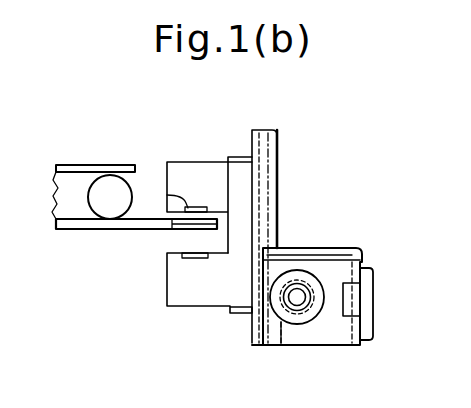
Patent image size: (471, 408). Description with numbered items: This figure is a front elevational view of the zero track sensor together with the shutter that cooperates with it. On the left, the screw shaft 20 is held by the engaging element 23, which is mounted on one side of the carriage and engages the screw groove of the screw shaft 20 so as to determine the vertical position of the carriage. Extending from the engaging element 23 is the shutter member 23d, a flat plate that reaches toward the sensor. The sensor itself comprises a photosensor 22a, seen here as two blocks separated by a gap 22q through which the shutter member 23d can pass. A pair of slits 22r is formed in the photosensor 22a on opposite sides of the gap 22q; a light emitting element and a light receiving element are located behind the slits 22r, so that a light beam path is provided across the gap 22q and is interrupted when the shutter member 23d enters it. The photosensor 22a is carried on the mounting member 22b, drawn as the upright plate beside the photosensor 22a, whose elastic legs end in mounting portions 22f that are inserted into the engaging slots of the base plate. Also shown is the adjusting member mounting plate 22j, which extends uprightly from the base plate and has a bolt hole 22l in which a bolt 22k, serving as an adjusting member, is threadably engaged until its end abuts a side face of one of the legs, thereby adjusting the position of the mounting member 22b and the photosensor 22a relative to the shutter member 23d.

The screw shaft 20 is at (92, 241).
The engaging element 23 is at (72, 158).
The shutter member 23d is at (206, 234).
The photosensor 22a is at (201, 149).
The mounting member 22b is at (263, 143).
The gap 22q is at (213, 251).
The slits 22r is at (172, 197).
The adjusting member mounting plate 22j is at (332, 275).
The mounting portion 22f is at (374, 308).
The bolt 22k is at (310, 322).
The bolt hole 22l is at (282, 345).